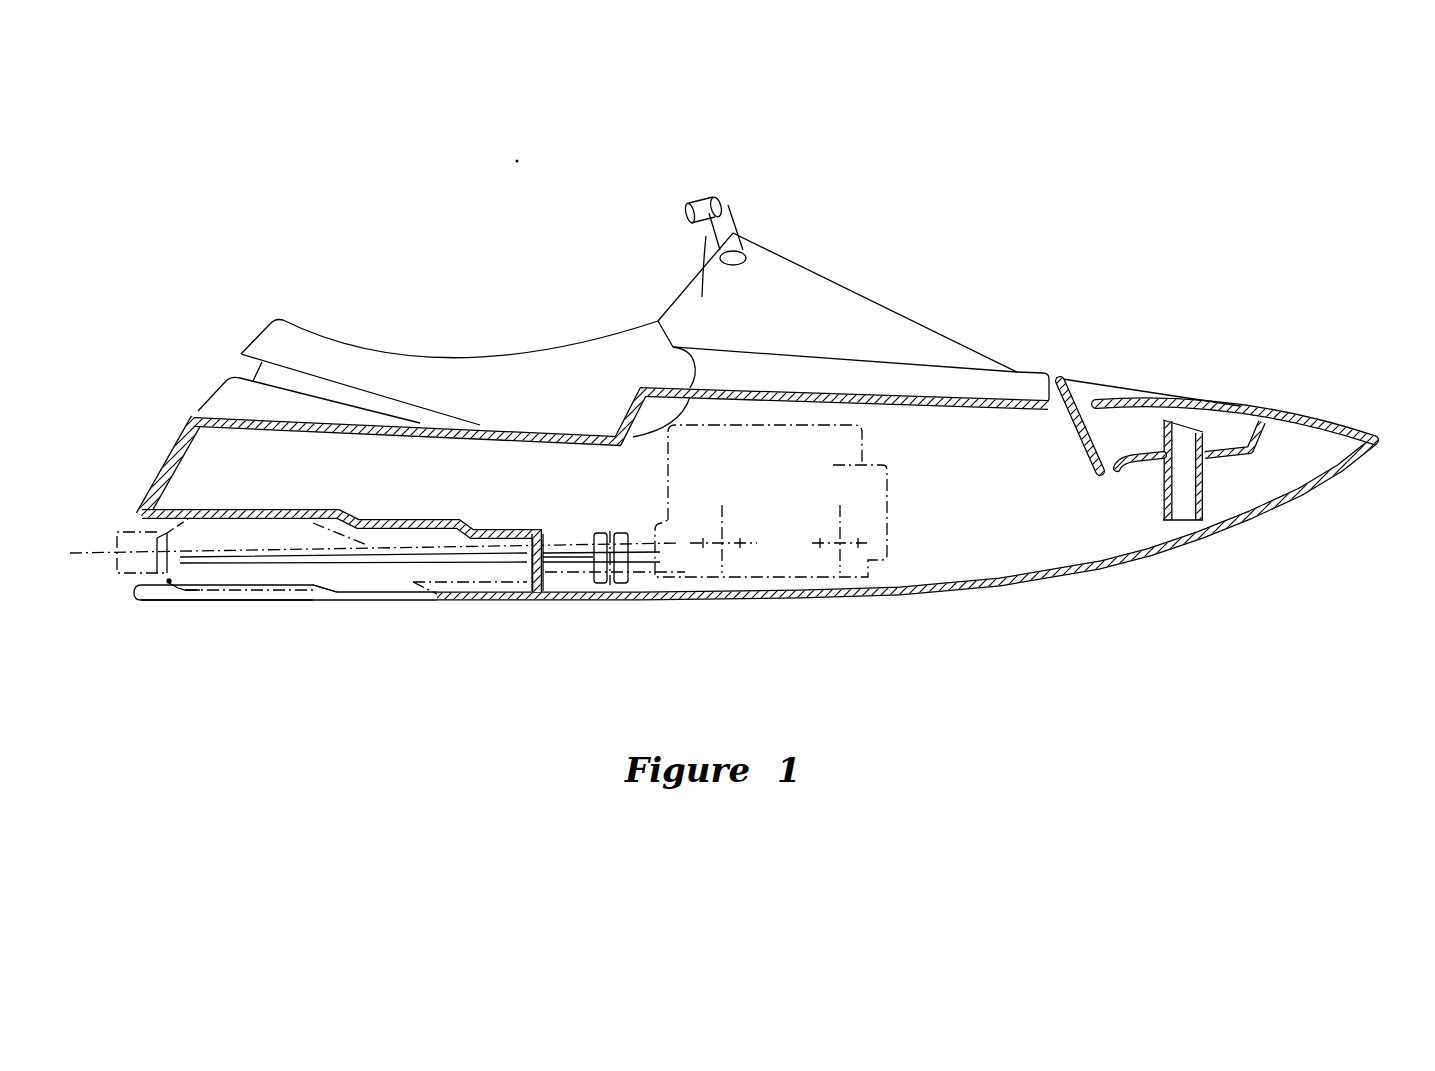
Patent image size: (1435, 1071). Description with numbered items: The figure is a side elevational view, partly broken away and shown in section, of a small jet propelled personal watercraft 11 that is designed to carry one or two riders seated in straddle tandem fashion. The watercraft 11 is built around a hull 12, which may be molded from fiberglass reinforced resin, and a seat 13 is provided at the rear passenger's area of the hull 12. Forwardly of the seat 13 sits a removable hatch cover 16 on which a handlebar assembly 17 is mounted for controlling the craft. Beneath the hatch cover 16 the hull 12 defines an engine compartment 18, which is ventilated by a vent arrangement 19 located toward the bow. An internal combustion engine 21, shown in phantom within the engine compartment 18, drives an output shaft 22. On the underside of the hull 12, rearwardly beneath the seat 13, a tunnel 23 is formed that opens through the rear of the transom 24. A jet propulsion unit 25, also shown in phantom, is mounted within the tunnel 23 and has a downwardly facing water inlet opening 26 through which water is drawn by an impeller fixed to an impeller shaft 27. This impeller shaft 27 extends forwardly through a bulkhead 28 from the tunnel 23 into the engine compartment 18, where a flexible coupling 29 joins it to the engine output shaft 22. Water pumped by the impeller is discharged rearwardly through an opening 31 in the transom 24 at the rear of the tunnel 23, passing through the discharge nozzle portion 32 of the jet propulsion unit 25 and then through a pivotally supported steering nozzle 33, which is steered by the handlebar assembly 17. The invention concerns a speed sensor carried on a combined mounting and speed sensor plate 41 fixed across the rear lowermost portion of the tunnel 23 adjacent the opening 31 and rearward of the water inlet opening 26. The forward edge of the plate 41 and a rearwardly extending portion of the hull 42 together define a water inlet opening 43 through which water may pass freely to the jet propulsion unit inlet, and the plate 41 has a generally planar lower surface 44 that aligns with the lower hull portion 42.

The watercraft 11 is at (1165, 326).
The hull 12 is at (1318, 406).
The seat 13 is at (492, 357).
The removable hatch cover 16 is at (847, 283).
The handlebar assembly 17 is at (727, 197).
The engine compartment 18 is at (960, 474).
The vent arrangement 19 is at (1216, 436).
The internal combustion engine 21 is at (888, 535).
The output shaft 22 is at (647, 575).
The tunnel 23 is at (243, 522).
The transom 24 is at (162, 467).
The jet propulsion unit 25 is at (362, 507).
The water inlet opening 26 is at (413, 580).
The impeller shaft 27 is at (549, 550).
The bulkhead 28 is at (527, 567).
The flexible coupling 29 is at (600, 598).
The opening 31 is at (137, 517).
The discharge nozzle portion 32 is at (168, 584).
The steering nozzle 33 is at (115, 567).
The mounting and speed sensor plate 41 is at (219, 612).
The rearwardly extending portion of the hull 42 is at (512, 590).
The water inlet opening 43 is at (337, 600).
The lower surface 44 is at (187, 603).